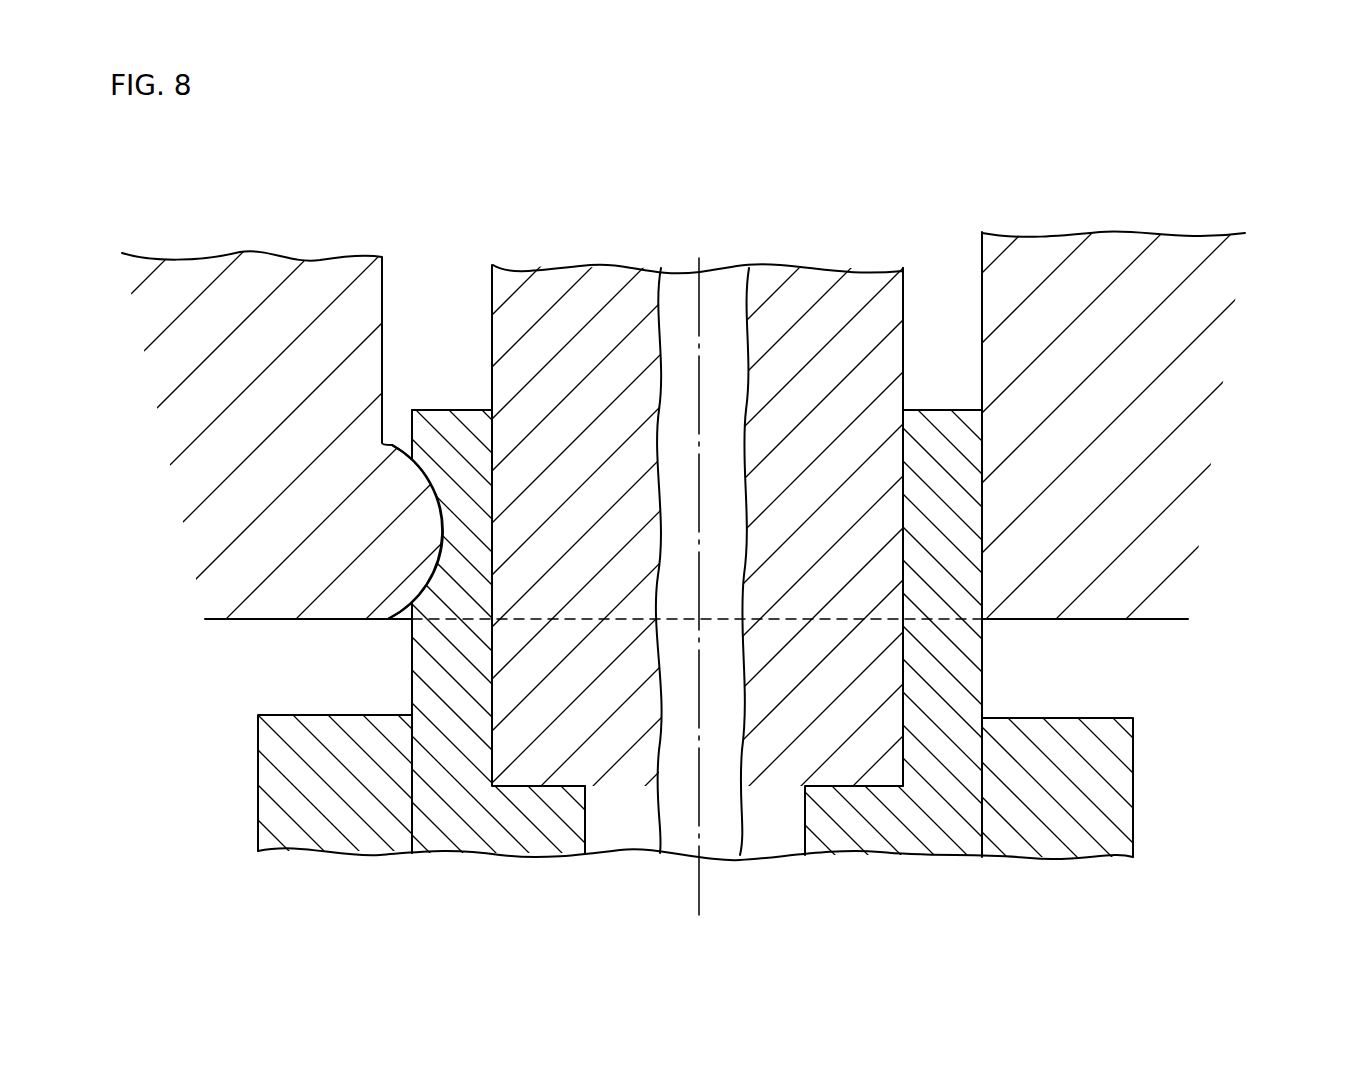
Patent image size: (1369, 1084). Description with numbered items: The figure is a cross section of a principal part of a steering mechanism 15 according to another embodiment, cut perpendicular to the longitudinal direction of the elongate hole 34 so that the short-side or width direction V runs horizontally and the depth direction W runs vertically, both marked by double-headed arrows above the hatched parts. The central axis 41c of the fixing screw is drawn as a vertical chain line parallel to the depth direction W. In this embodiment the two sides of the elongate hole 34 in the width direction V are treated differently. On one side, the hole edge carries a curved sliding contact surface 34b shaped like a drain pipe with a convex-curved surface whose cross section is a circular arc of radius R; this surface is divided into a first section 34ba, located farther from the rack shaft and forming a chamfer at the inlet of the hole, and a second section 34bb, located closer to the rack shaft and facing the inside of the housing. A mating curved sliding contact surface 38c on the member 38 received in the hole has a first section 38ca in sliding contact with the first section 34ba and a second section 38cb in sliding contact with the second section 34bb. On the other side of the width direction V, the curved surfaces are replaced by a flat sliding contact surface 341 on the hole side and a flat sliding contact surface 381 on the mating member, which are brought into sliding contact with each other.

The fluid dynamic bearing device 15 is at (1279, 351).
The elongate hole 34 is at (949, 332).
The curved sliding contact surface 34b is at (456, 547).
The first section 34ba is at (440, 600).
The second section 34bb is at (442, 490).
The flat sliding contact surface 341 is at (903, 547).
The housing 38 is at (1150, 791).
The flat sliding contact surface 381 is at (908, 490).
The curved sliding contact surface 38c is at (423, 567).
The first section 38ca is at (440, 600).
The second section 38cb is at (418, 465).
The central axis 41c is at (700, 893).
The radius of curvature R is at (411, 504).
The depth direction W is at (699, 93).
The short-side direction V is at (653, 215).